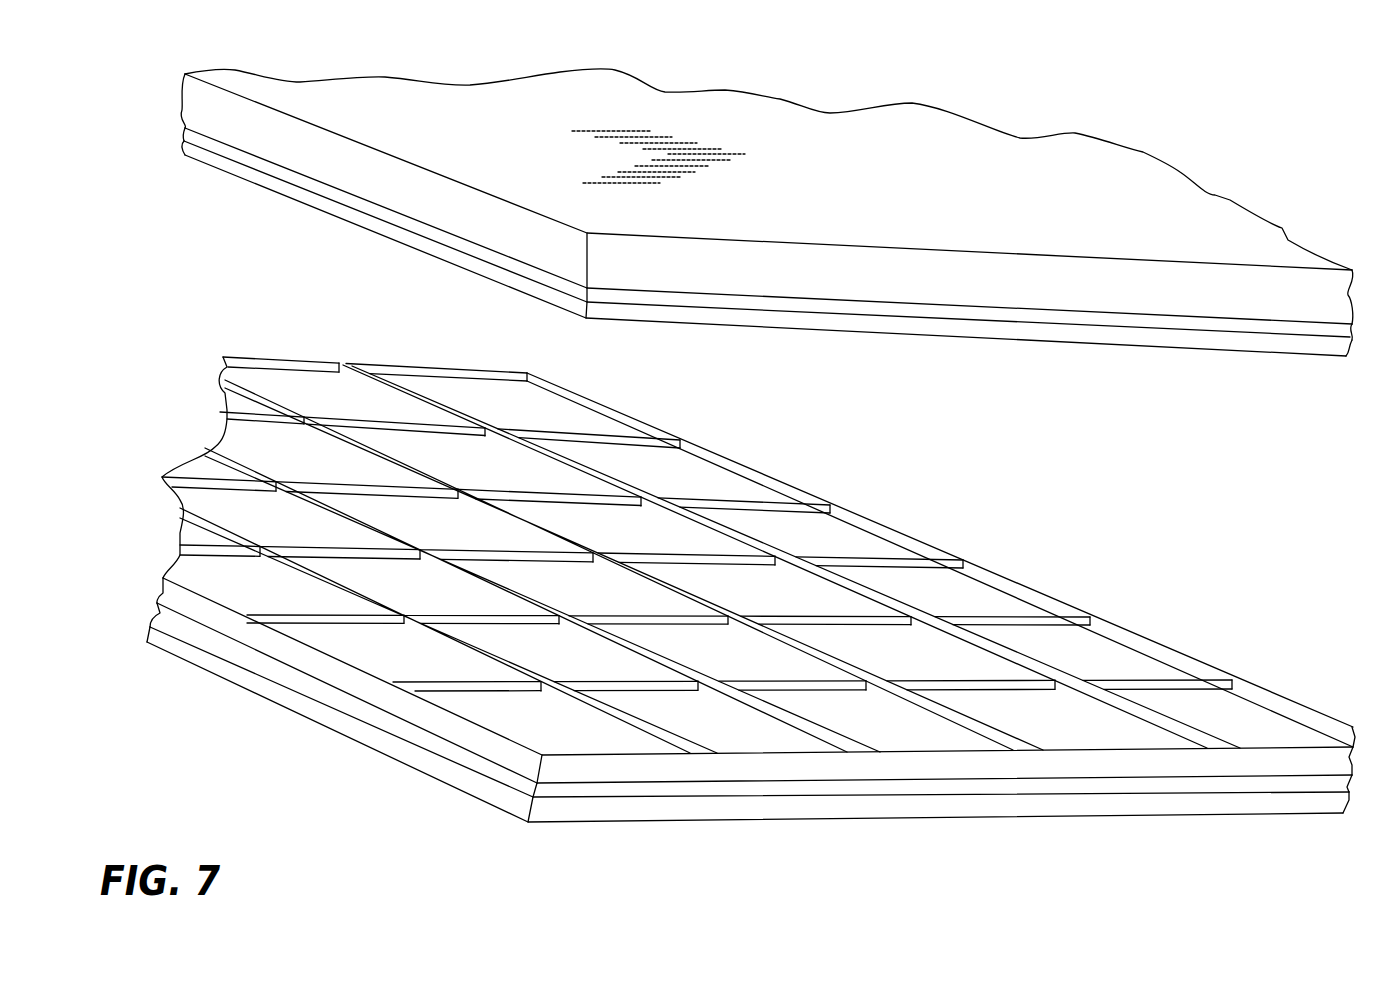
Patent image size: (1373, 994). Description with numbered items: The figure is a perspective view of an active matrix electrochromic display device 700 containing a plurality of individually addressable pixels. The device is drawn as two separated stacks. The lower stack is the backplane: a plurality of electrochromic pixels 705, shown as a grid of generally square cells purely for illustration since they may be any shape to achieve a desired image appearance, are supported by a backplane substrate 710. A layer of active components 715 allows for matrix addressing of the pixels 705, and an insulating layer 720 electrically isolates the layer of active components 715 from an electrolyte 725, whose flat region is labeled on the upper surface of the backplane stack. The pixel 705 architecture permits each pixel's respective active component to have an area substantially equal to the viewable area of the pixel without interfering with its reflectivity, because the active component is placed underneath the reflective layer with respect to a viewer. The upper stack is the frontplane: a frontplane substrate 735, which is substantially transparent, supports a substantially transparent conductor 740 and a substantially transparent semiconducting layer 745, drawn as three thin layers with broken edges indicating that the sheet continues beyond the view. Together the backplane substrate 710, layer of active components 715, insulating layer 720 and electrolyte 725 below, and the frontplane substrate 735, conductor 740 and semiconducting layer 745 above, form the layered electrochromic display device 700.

The active matrix electrochromic display device 700 is at (170, 831).
The electrochromic pixel 705 is at (704, 659).
The backplane substrate 710 is at (147, 641).
The layer of active components 715 is at (158, 606).
The insulating layer 720 is at (163, 580).
The electrolyte 725 is at (822, 432).
The frontplane substrate 735 is at (185, 92).
The substantially transparent conductor 740 is at (183, 130).
The substantially transparent semiconducting layer 745 is at (182, 152).